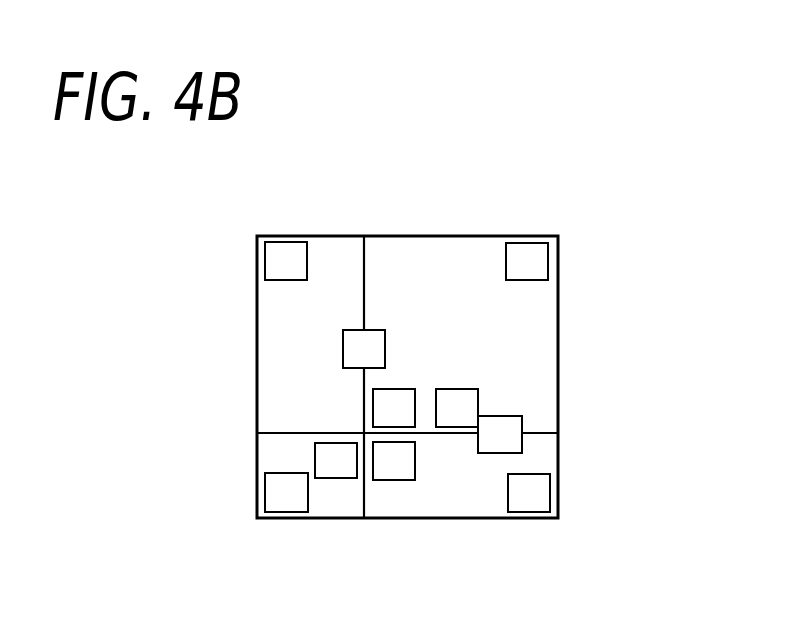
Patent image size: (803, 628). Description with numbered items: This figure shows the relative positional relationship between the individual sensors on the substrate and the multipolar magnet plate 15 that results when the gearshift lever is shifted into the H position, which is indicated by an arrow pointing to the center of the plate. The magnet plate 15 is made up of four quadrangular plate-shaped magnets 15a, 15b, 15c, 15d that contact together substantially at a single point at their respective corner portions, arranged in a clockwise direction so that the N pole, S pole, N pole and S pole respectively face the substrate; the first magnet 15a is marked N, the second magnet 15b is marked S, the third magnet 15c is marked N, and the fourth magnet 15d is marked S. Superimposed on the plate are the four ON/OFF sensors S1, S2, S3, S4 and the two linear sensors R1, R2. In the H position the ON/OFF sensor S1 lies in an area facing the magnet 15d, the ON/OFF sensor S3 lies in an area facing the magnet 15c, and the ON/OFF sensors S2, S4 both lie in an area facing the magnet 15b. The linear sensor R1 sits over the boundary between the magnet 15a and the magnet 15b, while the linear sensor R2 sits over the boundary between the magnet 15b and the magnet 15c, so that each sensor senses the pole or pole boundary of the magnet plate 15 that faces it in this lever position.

The magnet plate 15 is at (414, 220).
The quadrangular magnet 15a is at (333, 245).
The quadrangular magnet 15b is at (549, 319).
The quadrangular magnet 15c is at (482, 505).
The quadrangular magnet 15d is at (338, 505).
The H position H is at (356, 426).
The linear sensor R1 is at (364, 349).
The linear sensor R2 is at (500, 435).
The ON/OFF sensor S1 is at (336, 461).
The ON/OFF sensor S2 is at (394, 408).
The ON/OFF sensor S3 is at (394, 461).
The ON/OFF sensor S4 is at (457, 408).